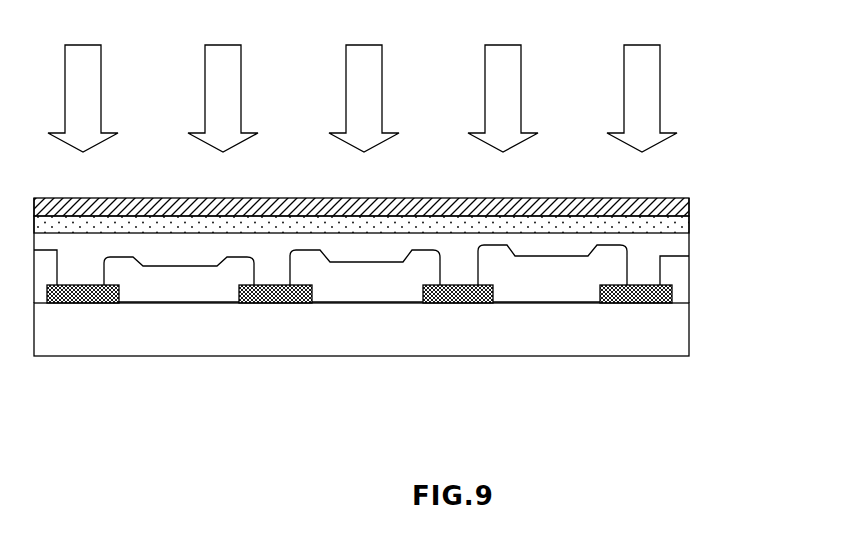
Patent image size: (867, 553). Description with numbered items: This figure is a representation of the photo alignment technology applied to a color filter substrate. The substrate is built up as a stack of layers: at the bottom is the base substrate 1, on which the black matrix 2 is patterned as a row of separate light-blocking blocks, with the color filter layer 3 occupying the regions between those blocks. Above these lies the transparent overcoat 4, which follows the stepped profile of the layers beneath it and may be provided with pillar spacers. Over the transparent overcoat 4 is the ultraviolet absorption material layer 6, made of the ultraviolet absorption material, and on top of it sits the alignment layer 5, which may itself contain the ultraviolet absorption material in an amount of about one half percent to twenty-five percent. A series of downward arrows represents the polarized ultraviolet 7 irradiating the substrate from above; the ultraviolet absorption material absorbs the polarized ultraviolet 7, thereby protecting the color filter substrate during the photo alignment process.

The base substrate 1 is at (672, 328).
The black matrix 2 is at (672, 292).
The color filter layer 3 is at (167, 293).
The transparent overcoat 4 is at (663, 256).
The alignment layer 5 is at (689, 198).
The ultraviolet absorption material layer 6 is at (663, 227).
The polarized ultraviolet 7 is at (645, 72).